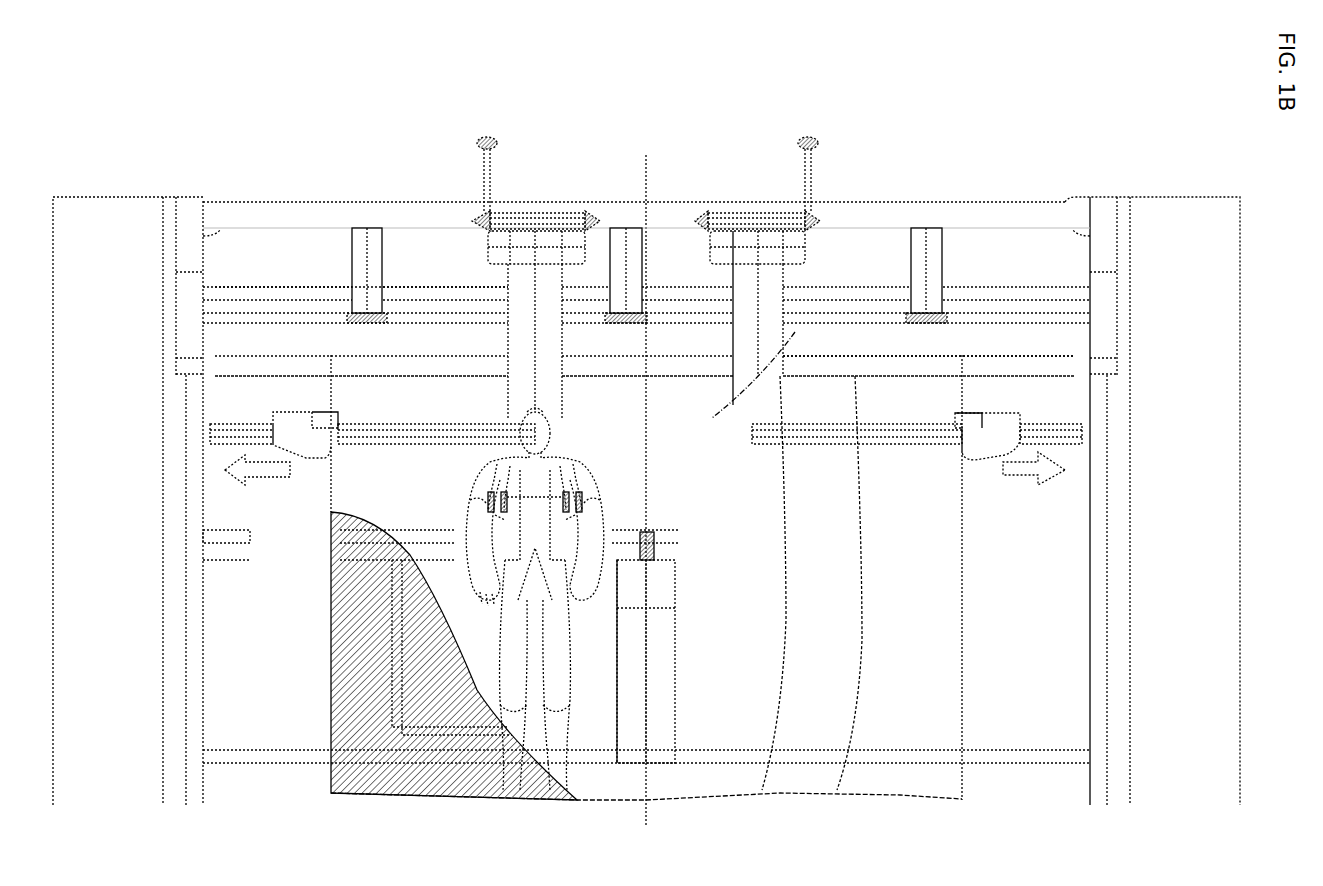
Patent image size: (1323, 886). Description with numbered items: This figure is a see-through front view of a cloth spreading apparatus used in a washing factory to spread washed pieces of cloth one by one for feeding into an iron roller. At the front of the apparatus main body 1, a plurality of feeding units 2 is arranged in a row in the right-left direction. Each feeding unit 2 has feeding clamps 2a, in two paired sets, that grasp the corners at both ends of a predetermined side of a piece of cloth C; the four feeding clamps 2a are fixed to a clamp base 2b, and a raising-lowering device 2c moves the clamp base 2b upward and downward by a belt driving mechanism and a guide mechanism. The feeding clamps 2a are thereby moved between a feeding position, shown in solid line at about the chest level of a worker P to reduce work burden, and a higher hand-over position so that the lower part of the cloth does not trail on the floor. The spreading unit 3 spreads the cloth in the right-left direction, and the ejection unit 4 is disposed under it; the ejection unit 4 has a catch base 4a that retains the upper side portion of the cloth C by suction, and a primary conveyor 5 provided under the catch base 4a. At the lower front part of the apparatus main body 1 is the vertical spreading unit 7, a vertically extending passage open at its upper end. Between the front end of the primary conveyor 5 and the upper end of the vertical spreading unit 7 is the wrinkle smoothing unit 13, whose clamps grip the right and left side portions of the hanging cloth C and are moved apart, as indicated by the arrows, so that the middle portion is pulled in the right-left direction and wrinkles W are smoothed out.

The apparatus main body 1 is at (1085, 130).
The feeding unit 2 is at (470, 255).
The feeding clamp 2a is at (478, 500).
The clamp base 2b is at (482, 478).
The raising-lowering device 2c is at (567, 395).
The spreading unit 3 is at (955, 243).
The ejection unit 4 is at (1030, 335).
The catch base 4a is at (978, 285).
The primary conveyor 5 is at (1065, 355).
The vertical spreading unit 7 is at (388, 528).
The wrinkle smoothing unit 13 is at (310, 462).
The cloth C is at (331, 650).
The worker P is at (598, 478).
The wrinkles W is at (786, 630).